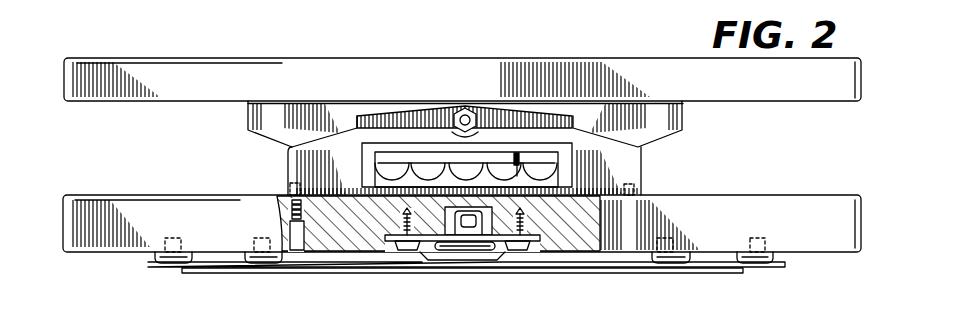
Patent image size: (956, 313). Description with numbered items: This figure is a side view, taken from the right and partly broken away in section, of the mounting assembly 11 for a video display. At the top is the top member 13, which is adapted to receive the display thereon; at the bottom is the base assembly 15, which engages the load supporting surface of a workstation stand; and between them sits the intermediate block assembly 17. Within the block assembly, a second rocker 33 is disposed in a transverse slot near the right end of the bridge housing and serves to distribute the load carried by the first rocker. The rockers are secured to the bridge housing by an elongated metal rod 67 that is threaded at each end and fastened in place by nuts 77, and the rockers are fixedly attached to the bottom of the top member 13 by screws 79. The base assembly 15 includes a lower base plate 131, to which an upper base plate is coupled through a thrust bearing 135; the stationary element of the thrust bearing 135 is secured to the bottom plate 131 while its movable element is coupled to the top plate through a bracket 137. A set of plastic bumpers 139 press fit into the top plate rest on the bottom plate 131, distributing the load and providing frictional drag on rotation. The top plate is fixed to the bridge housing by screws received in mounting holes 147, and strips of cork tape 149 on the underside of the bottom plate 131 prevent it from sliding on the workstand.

The mounting assembly 11 is at (70, 40).
The top member 13 is at (862, 82).
The base assembly 15 is at (862, 212).
The intermediate block assembly 17 is at (652, 164).
The second rocker 33 is at (681, 129).
The elongated metal rod 67 is at (461, 112).
The nuts 77 is at (472, 108).
The screws 79 is at (520, 154).
The lower base plate 131 is at (787, 265).
The thrust bearing 135 is at (444, 249).
The bracket 137 is at (392, 241).
The bumpers 139 is at (265, 264).
The mounting holes 147 is at (276, 194).
The strips of cork tape 149 is at (213, 274).